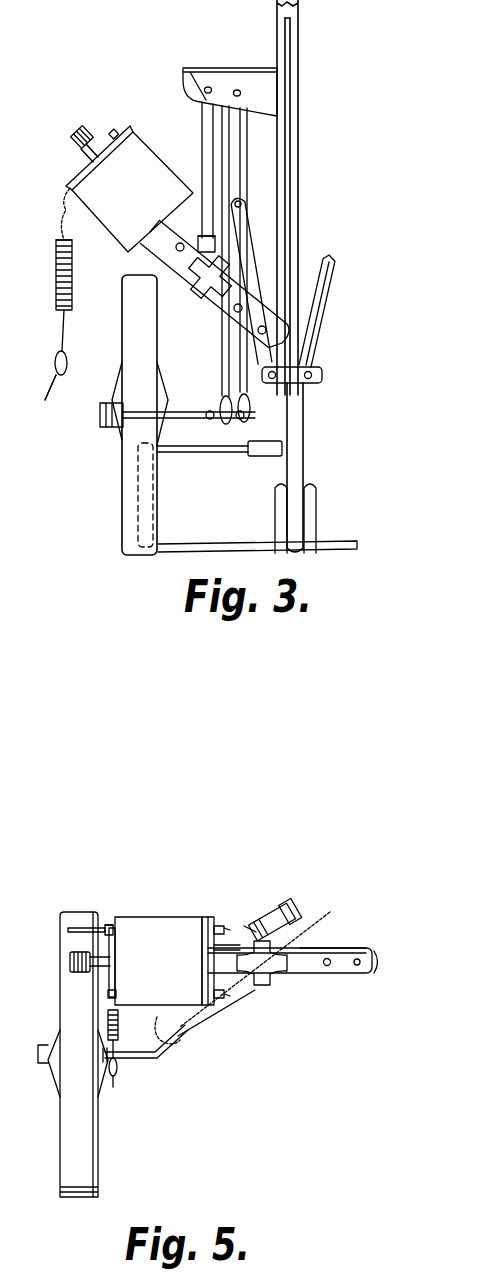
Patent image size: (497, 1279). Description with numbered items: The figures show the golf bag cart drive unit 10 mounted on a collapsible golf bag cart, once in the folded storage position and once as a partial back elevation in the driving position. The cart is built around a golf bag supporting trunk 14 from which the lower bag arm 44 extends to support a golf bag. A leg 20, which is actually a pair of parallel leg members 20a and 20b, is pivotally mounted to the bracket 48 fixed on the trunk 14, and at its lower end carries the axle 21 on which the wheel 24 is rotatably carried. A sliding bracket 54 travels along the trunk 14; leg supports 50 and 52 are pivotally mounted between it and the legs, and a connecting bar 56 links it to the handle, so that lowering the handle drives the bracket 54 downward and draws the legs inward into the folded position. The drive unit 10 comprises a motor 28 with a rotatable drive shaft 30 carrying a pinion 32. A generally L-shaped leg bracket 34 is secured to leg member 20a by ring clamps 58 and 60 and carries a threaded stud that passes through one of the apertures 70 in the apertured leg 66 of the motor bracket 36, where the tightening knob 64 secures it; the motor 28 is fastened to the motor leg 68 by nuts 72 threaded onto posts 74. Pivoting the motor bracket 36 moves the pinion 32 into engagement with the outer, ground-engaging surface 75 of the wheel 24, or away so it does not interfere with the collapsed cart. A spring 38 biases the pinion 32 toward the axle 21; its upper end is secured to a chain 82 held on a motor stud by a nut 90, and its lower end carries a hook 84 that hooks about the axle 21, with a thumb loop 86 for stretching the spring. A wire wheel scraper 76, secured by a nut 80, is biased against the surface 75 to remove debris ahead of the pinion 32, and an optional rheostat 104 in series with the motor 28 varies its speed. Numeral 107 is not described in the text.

In FIG. 3, the golf bag cart drive unit 10 is at (127, 257).
In FIG. 3, the golf bag supporting trunk 14 is at (281, 58).
In FIG. 3, the leg 20 is at (206, 154).
In FIG. 5, the leg 20 is at (223, 997).
In FIG. 3, the leg member 20a is at (208, 185).
In FIG. 5, the leg member 20a is at (200, 1012).
In FIG. 3, the leg member 20b is at (233, 153).
In FIG. 5, the leg member 20b is at (190, 1032).
In FIG. 3, the axle 21 is at (184, 419).
In FIG. 5, the axle 21 is at (128, 1059).
In FIG. 3, the wheel 24 is at (162, 516).
In FIG. 5, the wheel 24 is at (102, 1146).
In FIG. 3, the motor 28 is at (132, 192).
In FIG. 5, the motor 28 is at (160, 981).
In FIG. 3, the drive shaft 30 is at (92, 150).
In FIG. 5, the drive shaft 30 is at (96, 963).
In FIG. 3, the pinion 32 is at (90, 126).
In FIG. 5, the pinion 32 is at (70, 962).
In FIG. 3, the leg bracket 34 is at (212, 242).
In FIG. 5, the leg bracket 34 is at (263, 938).
In FIG. 3, the motor bracket 36 is at (212, 305).
In FIG. 5, the motor bracket 36 is at (340, 975).
In FIG. 3, the spring 38 is at (72, 280).
In FIG. 5, the spring 38 is at (118, 1030).
In FIG. 3, the lower bag arm 44 is at (237, 453).
In FIG. 3, the bracket 48 is at (240, 68).
In FIG. 3, the leg support 50 is at (251, 262).
In FIG. 3, the leg support 52 is at (320, 307).
In FIG. 3, the sliding bracket 54 is at (306, 385).
In FIG. 3, the connecting bar 56 is at (288, 108).
In FIG. 5, the ring clamp 58 is at (258, 916).
In FIG. 5, the ring clamp 60 is at (212, 950).
In FIG. 3, the tightening knob 64 is at (200, 290).
In FIG. 5, the tightening knob 64 is at (271, 958).
In FIG. 5, the apertured leg 66 is at (325, 975).
In FIG. 5, the motor leg 68 is at (211, 924).
In FIG. 5, the apertures 70 is at (356, 958).
In FIG. 5, the nuts 72 is at (221, 929).
In FIG. 5, the posts 74 is at (226, 929).
In FIG. 3, the outer surface 75 is at (129, 518).
In FIG. 5, the outer surface 75 is at (88, 1178).
In FIG. 5, the wheel scraper 76 is at (78, 927).
In FIG. 5, the nut 80 is at (108, 925).
In FIG. 3, the chain 82 is at (66, 189).
In FIG. 3, the hook 84 is at (66, 350).
In FIG. 3, the thumb loop 86 is at (56, 376).
In FIG. 5, the thumb loop 86 is at (113, 1082).
In FIG. 3, the nut 90 is at (114, 130).
In FIG. 5, the nut 90 is at (108, 995).
In FIG. 3, the rheostat 104 is at (14, 270).
In FIG. 5, the release assembly 107 is at (147, 888).